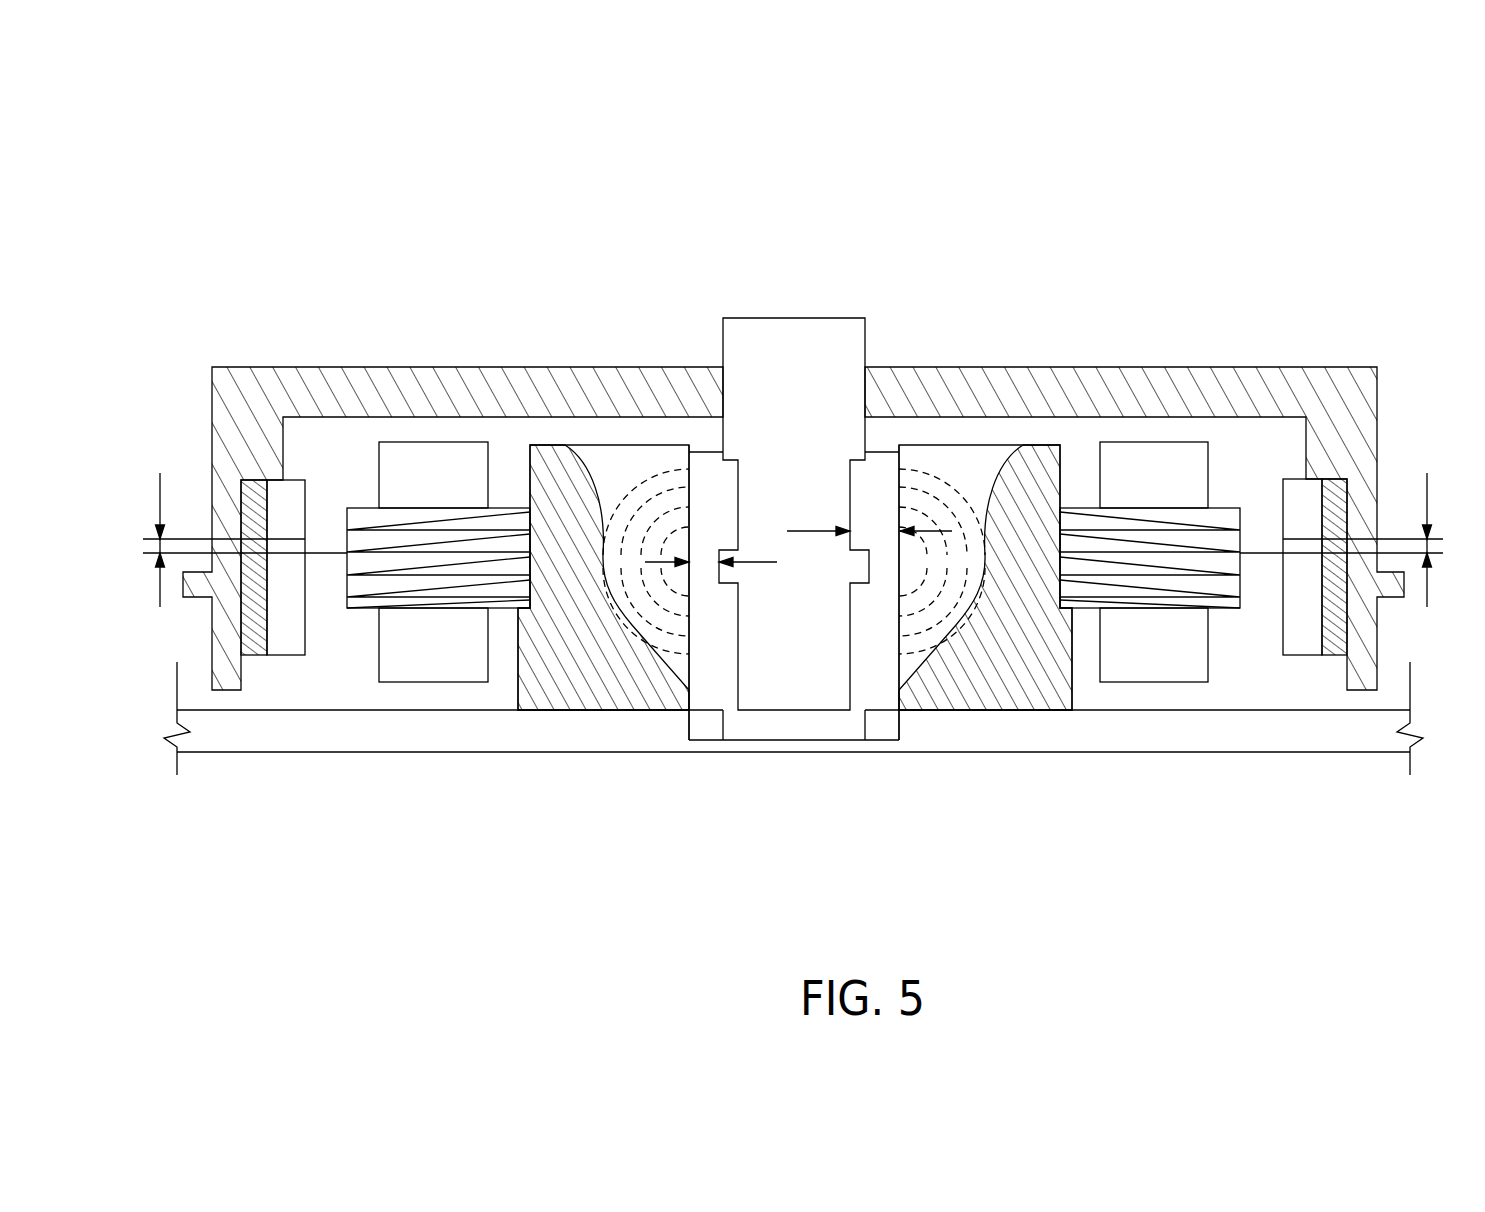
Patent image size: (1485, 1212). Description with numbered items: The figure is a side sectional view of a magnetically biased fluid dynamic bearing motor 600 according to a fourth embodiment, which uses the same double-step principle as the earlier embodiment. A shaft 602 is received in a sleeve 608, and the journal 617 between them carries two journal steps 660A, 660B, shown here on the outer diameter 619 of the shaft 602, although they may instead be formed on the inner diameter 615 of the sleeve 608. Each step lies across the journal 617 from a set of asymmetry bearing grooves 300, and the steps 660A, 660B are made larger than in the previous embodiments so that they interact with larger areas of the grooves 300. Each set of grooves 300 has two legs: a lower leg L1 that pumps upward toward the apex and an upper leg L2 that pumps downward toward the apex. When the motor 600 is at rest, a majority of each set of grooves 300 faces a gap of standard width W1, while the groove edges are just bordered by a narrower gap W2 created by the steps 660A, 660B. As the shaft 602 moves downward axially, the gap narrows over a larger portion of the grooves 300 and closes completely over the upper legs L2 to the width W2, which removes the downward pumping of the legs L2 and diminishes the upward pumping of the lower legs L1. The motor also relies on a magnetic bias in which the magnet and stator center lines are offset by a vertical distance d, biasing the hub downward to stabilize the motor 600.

The motor 600 is at (297, 215).
The shaft 602 is at (768, 390).
The sleeve 608 is at (1052, 585).
The inner diameter of the sleeve 615 is at (697, 443).
The journal 617 is at (710, 530).
The outer diameter of the shaft 619 is at (718, 468).
The journal step 660A is at (847, 452).
The journal step 660B is at (860, 620).
The bearing grooves 300 is at (975, 463).
The standard gap width W1 is at (881, 531).
The narrower gap width W2 is at (689, 531).
The lower groove leg L1 is at (691, 652).
The upper groove leg L2 is at (693, 592).
The vertical offset distance d is at (782, 540).